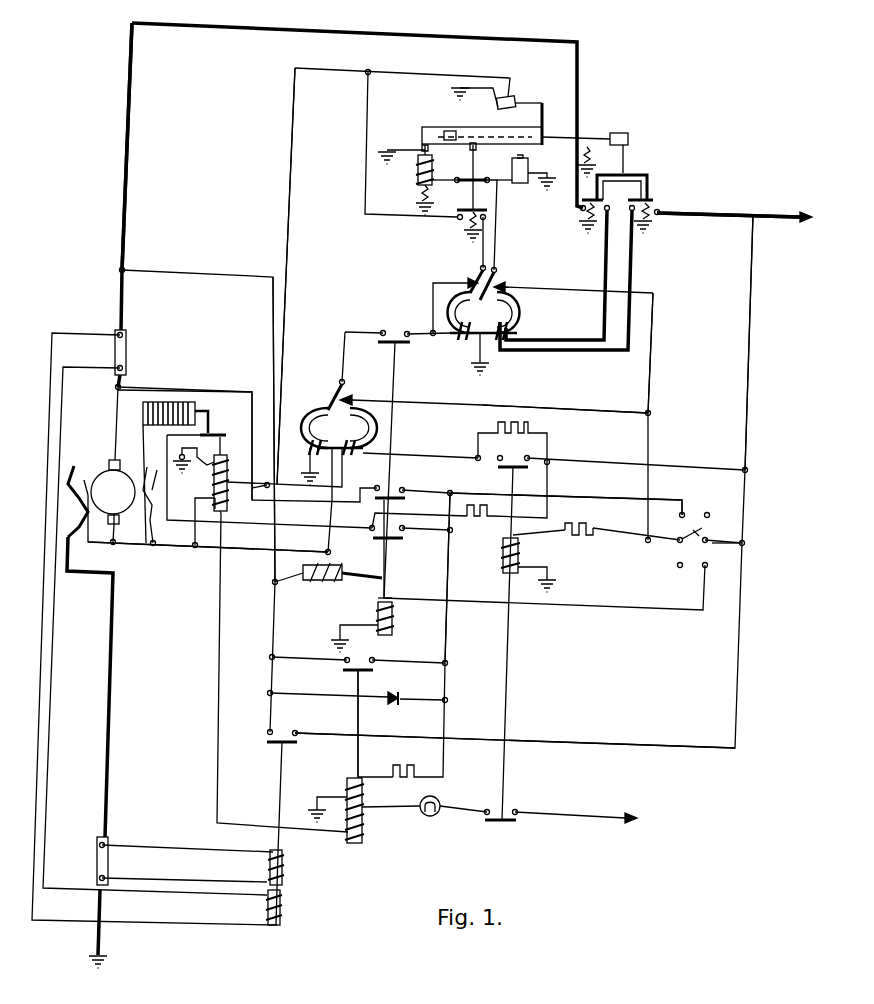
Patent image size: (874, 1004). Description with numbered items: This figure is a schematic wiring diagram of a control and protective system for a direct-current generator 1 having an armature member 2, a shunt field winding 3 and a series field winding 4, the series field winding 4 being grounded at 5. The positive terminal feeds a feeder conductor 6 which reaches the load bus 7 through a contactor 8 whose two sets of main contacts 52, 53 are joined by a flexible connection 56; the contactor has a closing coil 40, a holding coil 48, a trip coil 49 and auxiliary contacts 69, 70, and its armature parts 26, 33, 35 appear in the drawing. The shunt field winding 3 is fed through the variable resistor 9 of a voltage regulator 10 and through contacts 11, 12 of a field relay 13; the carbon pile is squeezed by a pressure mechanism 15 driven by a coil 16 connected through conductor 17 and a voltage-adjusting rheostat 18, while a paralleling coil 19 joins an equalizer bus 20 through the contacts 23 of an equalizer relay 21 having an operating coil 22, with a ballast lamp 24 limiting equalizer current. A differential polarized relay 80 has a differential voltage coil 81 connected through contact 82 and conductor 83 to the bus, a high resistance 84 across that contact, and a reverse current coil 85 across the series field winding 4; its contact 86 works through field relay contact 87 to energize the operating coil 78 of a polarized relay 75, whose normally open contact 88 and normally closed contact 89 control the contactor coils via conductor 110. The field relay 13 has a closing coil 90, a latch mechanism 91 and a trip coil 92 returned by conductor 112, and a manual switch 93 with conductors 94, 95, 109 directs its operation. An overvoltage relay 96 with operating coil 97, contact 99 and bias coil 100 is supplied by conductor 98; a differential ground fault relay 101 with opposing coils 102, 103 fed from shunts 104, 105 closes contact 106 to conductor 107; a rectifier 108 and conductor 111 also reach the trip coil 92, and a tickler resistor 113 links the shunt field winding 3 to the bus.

The direct-current generator 1 is at (102, 460).
The armature member 2 is at (118, 510).
The shunt field winding 3 is at (155, 478).
The series field winding 4 is at (74, 475).
The ground 5 is at (98, 941).
The feeder conductor 6 is at (128, 178).
The load bus 7 is at (775, 214).
The contactor 8 is at (591, 122).
The variable resistor 9 is at (168, 400).
The voltage regulator 10 is at (242, 428).
The contact 11 is at (380, 540).
The contact 12 is at (391, 495).
The field relay 13 is at (408, 567).
The pressure mechanism 15 is at (210, 425).
The coil 16 is at (228, 472).
The conductor 17 is at (272, 316).
The voltage-adjusting rheostat 18 is at (193, 465).
The paralleling coil 19 is at (222, 497).
The equalizer bus 20 is at (578, 820).
The equalizer relay 21 is at (528, 667).
The operating coil 22 is at (501, 551).
The contacts 23 is at (502, 822).
The ballast lamp 24 is at (432, 816).
The armature stop 26 is at (455, 140).
The armature end 33 is at (602, 136).
The armature 35 is at (542, 119).
The closing coil 40 is at (418, 176).
The holding coil 48 is at (512, 183).
The trip coil 49 is at (496, 110).
The main contacts 52 is at (582, 210).
The main contacts 53 is at (625, 200).
The flexible connection 56 is at (520, 340).
The auxiliary contact 69 is at (460, 208).
The auxiliary contact 70 is at (476, 177).
The polarized relay 75 is at (547, 316).
The operating coil 78 is at (470, 340).
The differential polarized relay 80 is at (309, 401).
The differential voltage coil 81 is at (347, 455).
The contact 82 is at (500, 470).
The conductor 83 is at (749, 337).
The high resistance 84 is at (530, 431).
The reverse current coil 85 is at (303, 465).
The contact 86 is at (336, 388).
The contact 87 is at (403, 344).
The normally open contact 88 is at (497, 275).
The normally closed contact 89 is at (476, 270).
The closing coil 90 is at (392, 622).
The latch mechanism 91 is at (370, 580).
The trip coil 92 is at (318, 582).
The manual switch 93 is at (668, 559).
The conductor 94 is at (587, 502).
The conductor 95 is at (220, 391).
The overvoltage relay 96 is at (349, 727).
The operating coil 97 is at (360, 796).
The conductor 98 is at (446, 633).
The contact 99 is at (344, 672).
The bias coil 100 is at (360, 826).
The differential ground fault relay 101 is at (272, 809).
The coil 102 is at (284, 870).
The coil 103 is at (282, 915).
The shunt 104 is at (108, 866).
The shunt 105 is at (126, 352).
The contact 106 is at (270, 745).
The conductor 107 is at (611, 750).
The rectifier 108 is at (388, 707).
The conductor 109 is at (571, 412).
The conductor 110 is at (651, 333).
The conductor 111 is at (288, 167).
The conductor 112 is at (212, 550).
The tickler resistor 113 is at (487, 520).